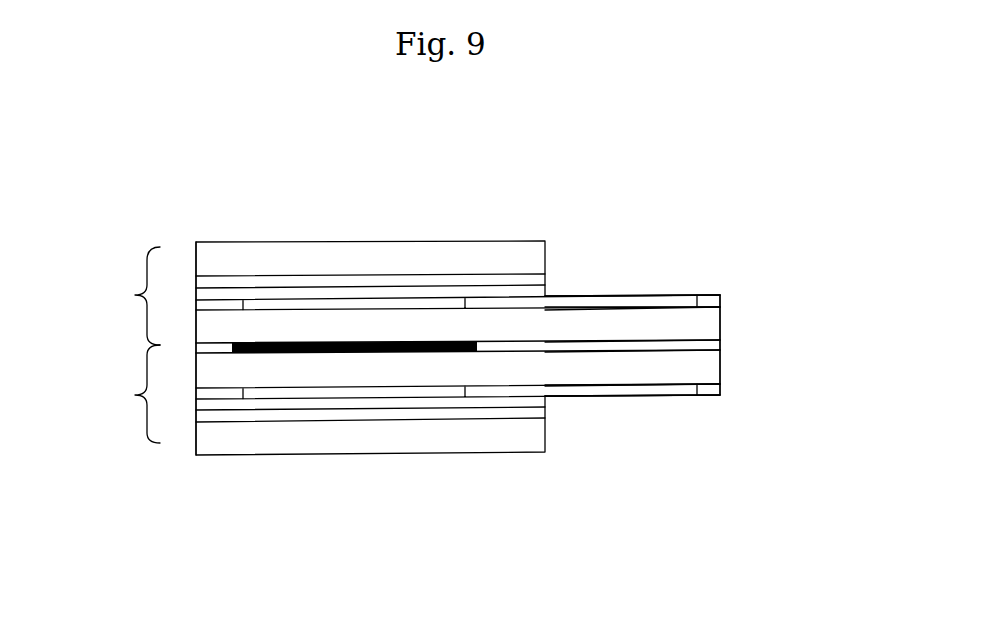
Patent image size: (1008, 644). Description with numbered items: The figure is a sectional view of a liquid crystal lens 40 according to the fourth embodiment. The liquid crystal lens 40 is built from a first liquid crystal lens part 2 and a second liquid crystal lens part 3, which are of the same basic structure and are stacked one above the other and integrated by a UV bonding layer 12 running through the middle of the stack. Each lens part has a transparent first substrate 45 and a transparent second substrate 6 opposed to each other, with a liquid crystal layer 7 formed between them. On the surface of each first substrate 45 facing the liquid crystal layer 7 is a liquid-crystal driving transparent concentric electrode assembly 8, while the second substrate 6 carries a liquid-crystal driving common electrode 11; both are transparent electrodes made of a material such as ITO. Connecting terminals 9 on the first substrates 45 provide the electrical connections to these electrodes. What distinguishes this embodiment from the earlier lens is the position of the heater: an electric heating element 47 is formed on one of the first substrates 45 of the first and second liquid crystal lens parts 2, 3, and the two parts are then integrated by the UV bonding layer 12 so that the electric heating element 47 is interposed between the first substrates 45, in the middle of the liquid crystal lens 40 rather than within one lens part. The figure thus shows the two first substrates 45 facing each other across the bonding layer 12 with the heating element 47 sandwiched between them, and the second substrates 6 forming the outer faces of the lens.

The first liquid crystal lens part 2 is at (133, 296).
The second liquid crystal lens part 3 is at (133, 394).
The second substrate 6 is at (462, 258).
The liquid crystal layer 7 is at (313, 298).
The concentric electrode assembly 8 is at (407, 300).
The connecting terminal 9 is at (663, 303).
The common electrode 11 is at (215, 278).
The UV bonding layer 12 is at (720, 342).
The liquid crystal lens 40 is at (580, 281).
The first substrate 45 is at (615, 327).
The electric heating element 47 is at (266, 357).